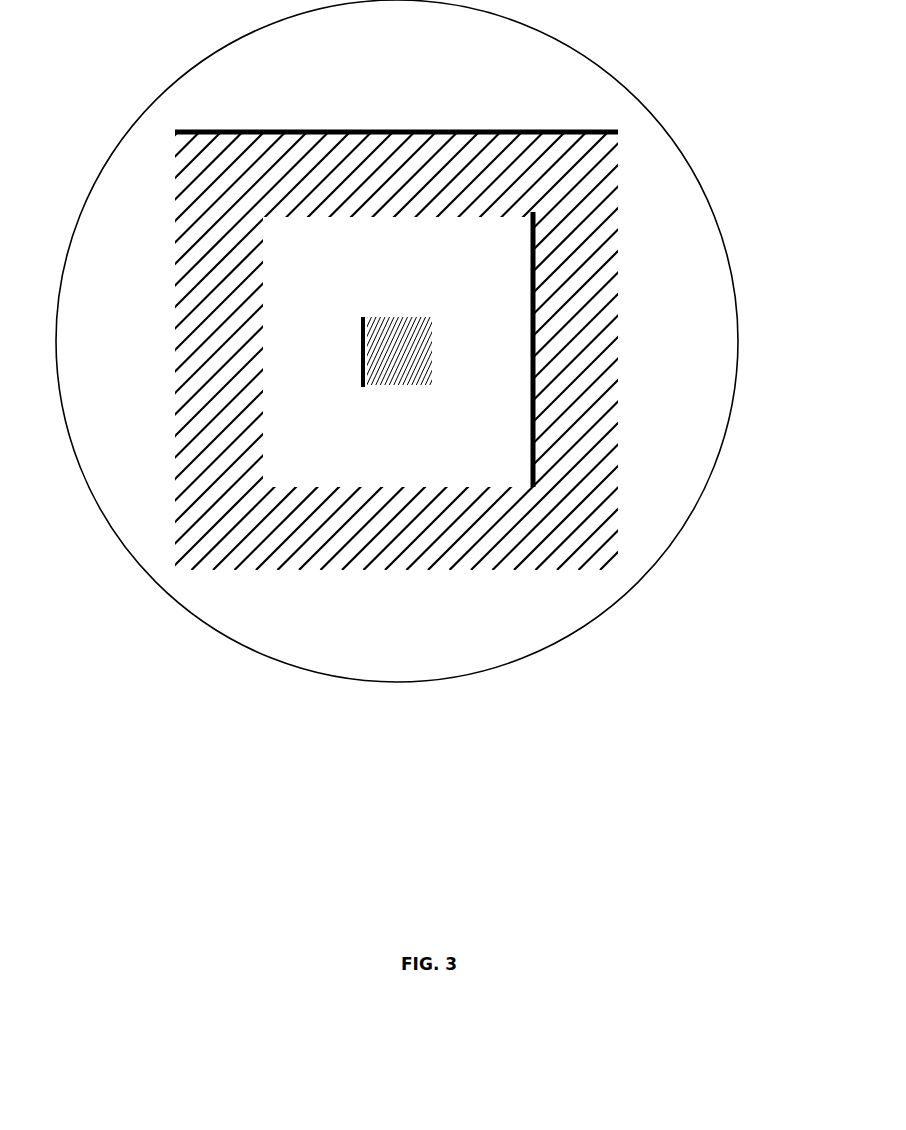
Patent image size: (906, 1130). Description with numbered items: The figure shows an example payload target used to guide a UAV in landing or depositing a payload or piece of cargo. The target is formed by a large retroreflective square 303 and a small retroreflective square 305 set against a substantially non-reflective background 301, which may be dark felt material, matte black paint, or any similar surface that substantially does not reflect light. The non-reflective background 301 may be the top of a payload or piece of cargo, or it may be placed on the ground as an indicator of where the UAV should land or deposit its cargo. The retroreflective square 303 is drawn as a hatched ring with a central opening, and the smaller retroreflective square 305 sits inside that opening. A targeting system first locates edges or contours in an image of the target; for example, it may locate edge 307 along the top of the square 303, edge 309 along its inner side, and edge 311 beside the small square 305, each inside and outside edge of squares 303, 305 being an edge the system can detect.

The substantially non-reflective background 301 is at (220, 73).
The retroreflective square 303 is at (210, 193).
The retroreflective square 305 is at (417, 350).
The edge 307 is at (628, 140).
The edge 309 is at (550, 456).
The edge 311 is at (352, 350).